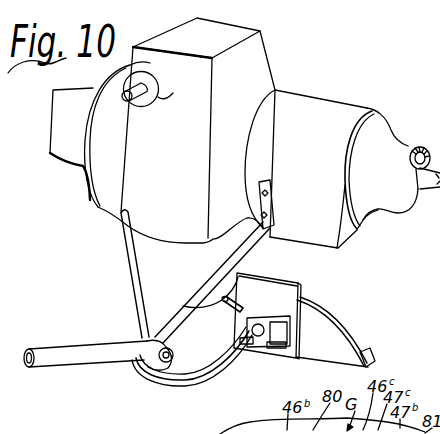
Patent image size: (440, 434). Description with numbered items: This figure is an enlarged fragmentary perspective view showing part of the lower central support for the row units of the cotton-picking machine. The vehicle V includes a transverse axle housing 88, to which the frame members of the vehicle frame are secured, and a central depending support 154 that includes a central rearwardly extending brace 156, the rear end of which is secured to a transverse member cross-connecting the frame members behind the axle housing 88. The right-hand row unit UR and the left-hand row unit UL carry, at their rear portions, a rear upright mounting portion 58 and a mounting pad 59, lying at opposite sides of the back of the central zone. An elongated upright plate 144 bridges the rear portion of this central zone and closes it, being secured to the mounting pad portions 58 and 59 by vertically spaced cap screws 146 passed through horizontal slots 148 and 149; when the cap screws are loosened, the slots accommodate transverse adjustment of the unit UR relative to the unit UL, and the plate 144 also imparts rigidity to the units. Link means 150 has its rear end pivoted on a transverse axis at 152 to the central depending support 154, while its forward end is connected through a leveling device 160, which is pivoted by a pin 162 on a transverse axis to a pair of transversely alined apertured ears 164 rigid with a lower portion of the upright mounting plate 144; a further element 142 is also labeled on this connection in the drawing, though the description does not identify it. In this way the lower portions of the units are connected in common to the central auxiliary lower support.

The vehicle V is at (283, 70).
The transverse axle housing 88 is at (98, 193).
The mounting pad 59 is at (205, 292).
The left-hand row unit UL is at (182, 306).
The central depending support 154 is at (125, 271).
The central rearwardly extending brace 156 is at (75, 359).
The pivot 152 is at (157, 373).
The link means 150 is at (178, 390).
The slot 149 is at (243, 352).
The upright plate 144 is at (283, 281).
The leveling device 160 is at (258, 321).
The apertured ears 164 is at (267, 352).
The pin 162 is at (258, 326).
The pin 142 is at (250, 345).
The cap screw 146 is at (265, 346).
The rear upright mounting portion 58 is at (306, 299).
The slot 148 is at (225, 366).
The right-hand row unit UR is at (356, 345).